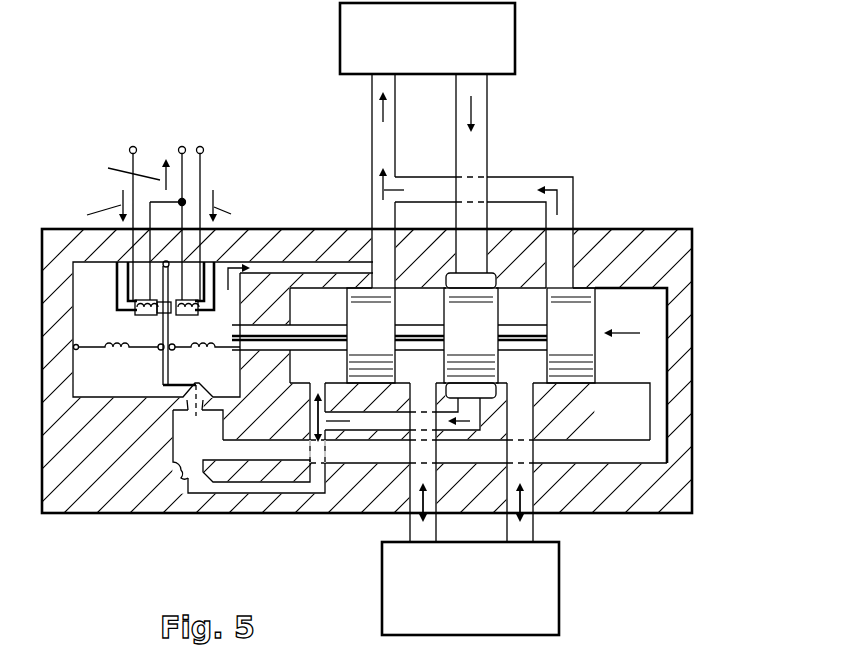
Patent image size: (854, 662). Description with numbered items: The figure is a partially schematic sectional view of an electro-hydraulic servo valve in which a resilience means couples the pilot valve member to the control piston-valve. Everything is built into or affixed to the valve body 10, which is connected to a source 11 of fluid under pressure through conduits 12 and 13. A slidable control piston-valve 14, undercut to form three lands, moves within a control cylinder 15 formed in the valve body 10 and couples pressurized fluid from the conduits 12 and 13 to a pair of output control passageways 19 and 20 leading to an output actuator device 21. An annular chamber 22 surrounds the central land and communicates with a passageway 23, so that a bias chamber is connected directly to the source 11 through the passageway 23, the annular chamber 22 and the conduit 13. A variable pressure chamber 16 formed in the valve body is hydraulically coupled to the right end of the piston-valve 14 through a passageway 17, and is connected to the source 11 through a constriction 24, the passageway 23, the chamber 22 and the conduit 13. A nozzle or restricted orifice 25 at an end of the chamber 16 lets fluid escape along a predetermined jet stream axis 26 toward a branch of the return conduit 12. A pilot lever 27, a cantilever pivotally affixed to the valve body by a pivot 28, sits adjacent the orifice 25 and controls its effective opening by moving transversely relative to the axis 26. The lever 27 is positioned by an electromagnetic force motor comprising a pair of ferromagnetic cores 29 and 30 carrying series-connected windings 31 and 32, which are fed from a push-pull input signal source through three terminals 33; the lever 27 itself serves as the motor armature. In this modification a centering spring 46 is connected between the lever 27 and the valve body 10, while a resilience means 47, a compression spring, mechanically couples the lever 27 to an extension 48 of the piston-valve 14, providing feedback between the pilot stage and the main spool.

The valve body 10 is at (628, 238).
The source of fluid 11 is at (515, 58).
The conduit 12 is at (372, 112).
The conduit 13 is at (482, 112).
The control piston-valve 14 is at (573, 293).
The control cylinder 15 is at (618, 297).
The variable pressure chamber 16 is at (197, 428).
The passageway 17 is at (255, 450).
The output control passageway 19 is at (410, 527).
The output control passageway 20 is at (524, 527).
The output actuator device 21 is at (559, 560).
The annular chamber 22 is at (452, 278).
The passageway 23 is at (318, 483).
The constriction 24 is at (190, 474).
The nozzle or restricted orifice 25 is at (193, 388).
The jet stream axis 26 is at (198, 370).
The pilot lever 27 is at (163, 366).
The pivot 28 is at (165, 261).
The ferromagnetic core 29 is at (122, 277).
The ferromagnetic core 30 is at (205, 303).
The winding 31 is at (141, 313).
The winding 32 is at (188, 315).
The terminals 33 is at (131, 147).
The centering spring 46 is at (108, 347).
The resilience means 47 is at (203, 342).
The extension 48 is at (268, 327).